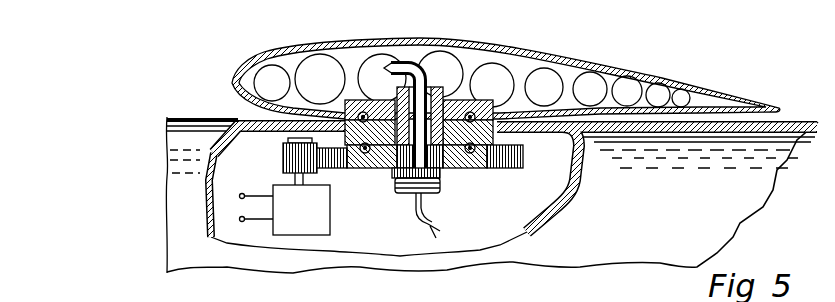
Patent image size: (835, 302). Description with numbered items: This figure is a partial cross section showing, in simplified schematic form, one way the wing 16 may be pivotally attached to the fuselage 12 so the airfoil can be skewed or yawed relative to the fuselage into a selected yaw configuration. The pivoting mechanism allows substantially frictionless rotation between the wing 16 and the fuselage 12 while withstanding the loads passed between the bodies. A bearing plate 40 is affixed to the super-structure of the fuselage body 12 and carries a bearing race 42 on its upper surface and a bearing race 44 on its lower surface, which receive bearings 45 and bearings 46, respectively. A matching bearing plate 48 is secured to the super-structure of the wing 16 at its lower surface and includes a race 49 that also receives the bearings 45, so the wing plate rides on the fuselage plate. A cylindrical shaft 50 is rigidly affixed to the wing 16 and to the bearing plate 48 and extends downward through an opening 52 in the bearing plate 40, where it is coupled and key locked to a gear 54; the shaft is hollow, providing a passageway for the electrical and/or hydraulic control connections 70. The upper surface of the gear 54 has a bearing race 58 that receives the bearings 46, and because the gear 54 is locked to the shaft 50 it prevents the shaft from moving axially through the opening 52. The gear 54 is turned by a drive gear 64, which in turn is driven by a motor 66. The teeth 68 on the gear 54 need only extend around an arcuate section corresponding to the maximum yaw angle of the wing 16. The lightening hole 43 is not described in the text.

The fuselage 12 is at (211, 118).
The wing 16 is at (292, 57).
The bearing plate 40 is at (498, 136).
The bearing race 42 is at (458, 166).
The lightening hole 43 is at (542, 117).
The bearing race 44 is at (496, 168).
The bearings 45 is at (477, 113).
The bearings 46 is at (479, 168).
The bearing plate 48 is at (351, 99).
The race 49 is at (343, 100).
The cylindrical shaft 50 is at (444, 84).
The opening 52 is at (392, 70).
The gear 54 is at (407, 191).
The bearing race 58 is at (384, 172).
The drive gear 64 is at (283, 158).
The motor 66 is at (273, 186).
The teeth 68 is at (342, 173).
The electrical and/or hydraulic control connections 70 is at (416, 208).